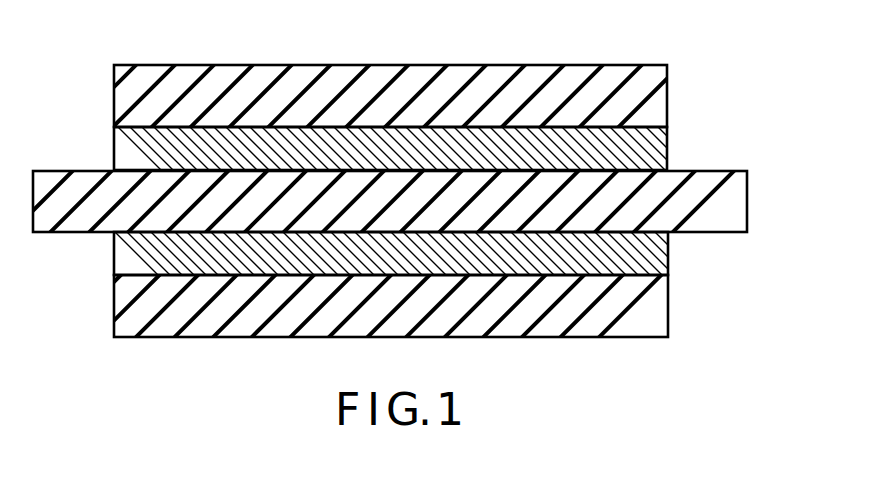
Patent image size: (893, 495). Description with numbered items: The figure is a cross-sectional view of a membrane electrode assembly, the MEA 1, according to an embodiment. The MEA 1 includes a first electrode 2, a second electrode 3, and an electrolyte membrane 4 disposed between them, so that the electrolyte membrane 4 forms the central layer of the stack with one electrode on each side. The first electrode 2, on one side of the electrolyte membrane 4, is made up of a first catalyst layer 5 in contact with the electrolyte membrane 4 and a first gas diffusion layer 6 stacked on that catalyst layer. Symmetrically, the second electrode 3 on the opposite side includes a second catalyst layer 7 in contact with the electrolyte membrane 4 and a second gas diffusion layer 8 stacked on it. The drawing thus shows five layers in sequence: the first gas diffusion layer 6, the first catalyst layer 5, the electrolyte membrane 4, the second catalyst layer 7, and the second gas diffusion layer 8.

The MEA 1 is at (419, 201).
The first electrode 2 is at (413, 115).
The second electrode 3 is at (405, 287).
The electrolyte membrane 4 is at (747, 197).
The first catalyst layer 5 is at (416, 148).
The first gas diffusion layer 6 is at (667, 93).
The second catalyst layer 7 is at (668, 257).
The second gas diffusion layer 8 is at (384, 307).